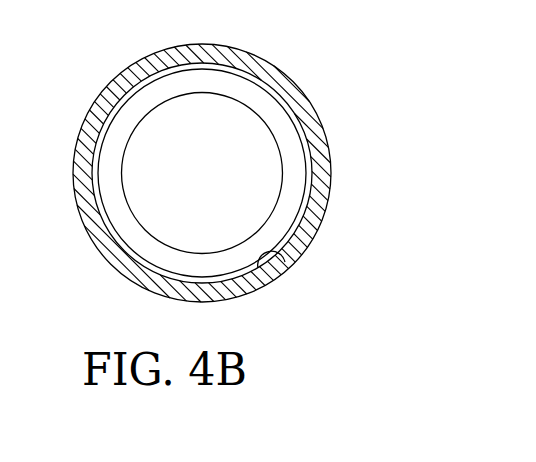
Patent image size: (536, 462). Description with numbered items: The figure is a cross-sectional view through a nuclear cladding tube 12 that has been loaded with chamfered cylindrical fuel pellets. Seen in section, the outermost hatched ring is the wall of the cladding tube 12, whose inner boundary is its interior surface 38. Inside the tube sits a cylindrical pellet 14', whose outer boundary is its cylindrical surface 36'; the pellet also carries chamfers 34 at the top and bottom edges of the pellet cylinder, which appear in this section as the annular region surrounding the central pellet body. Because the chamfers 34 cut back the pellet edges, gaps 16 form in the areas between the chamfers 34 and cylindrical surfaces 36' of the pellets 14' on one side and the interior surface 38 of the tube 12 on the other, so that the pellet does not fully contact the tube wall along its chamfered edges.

The cladding tube 12 is at (242, 63).
The chamfer 34 is at (255, 98).
The cylindrical pellet 14' is at (255, 173).
The gap 16 is at (313, 160).
The cylindrical surface 36' is at (234, 173).
The interior surface 38 is at (285, 262).